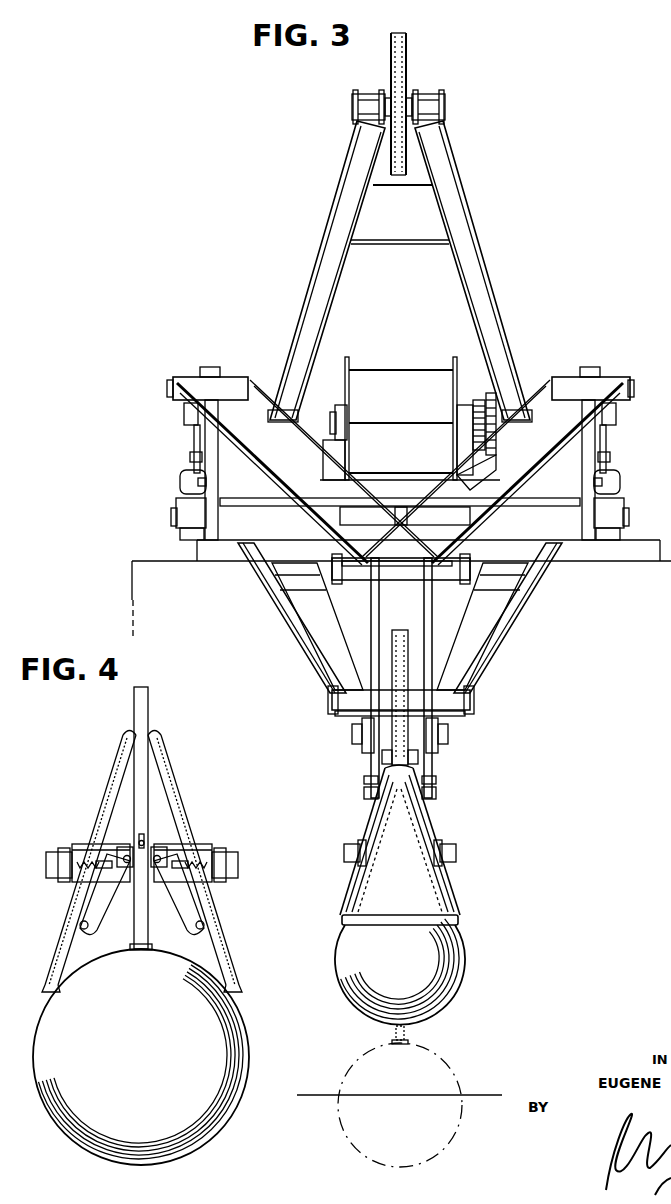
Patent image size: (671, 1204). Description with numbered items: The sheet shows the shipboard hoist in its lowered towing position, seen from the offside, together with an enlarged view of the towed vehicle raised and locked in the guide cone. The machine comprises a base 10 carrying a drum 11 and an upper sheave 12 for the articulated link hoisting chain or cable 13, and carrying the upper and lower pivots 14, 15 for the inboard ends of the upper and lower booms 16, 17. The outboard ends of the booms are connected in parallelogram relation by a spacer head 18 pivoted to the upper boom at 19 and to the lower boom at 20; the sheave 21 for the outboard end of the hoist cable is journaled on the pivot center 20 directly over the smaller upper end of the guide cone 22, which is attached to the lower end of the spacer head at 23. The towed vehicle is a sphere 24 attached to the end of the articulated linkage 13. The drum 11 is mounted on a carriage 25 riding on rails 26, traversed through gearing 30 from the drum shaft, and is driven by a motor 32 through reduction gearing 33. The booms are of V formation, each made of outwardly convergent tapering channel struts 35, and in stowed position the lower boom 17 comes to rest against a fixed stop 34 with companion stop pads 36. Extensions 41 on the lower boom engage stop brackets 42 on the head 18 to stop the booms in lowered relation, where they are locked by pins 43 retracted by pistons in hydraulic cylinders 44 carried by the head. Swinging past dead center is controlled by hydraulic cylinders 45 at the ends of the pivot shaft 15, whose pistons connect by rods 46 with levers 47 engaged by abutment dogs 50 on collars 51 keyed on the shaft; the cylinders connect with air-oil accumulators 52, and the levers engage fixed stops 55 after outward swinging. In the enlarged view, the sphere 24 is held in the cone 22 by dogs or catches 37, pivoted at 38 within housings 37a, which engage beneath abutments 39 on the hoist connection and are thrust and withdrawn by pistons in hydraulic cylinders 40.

In FIG. 3, the base 10 is at (612, 548).
In FIG. 3, the drum 11 is at (390, 372).
In FIG. 3, the upper sheave 12 is at (407, 52).
In FIG. 4, the articulated link hoisting chain or cable 13 is at (148, 712).
In FIG. 3, the upper pivot 14 is at (170, 384).
In FIG. 3, the lower pivot 15 is at (176, 506).
In FIG. 3, the upper boom 16 is at (280, 512).
In FIG. 3, the lower boom 17 is at (282, 618).
In FIG. 3, the spacer head 18 is at (424, 620).
In FIG. 3, the upper boom pivot 19 is at (400, 578).
In FIG. 3, the lower boom pivot 20 is at (328, 698).
In FIG. 3, the sheave 21 is at (404, 655).
In FIG. 3, the guide cone 22 is at (442, 888).
In FIG. 4, the guide cone 22 is at (163, 772).
In FIG. 3, the cone attachment 23 is at (364, 793).
In FIG. 3, the sphere 24 is at (462, 980).
In FIG. 4, the sphere 24 is at (154, 1067).
In FIG. 3, the carriage 25 is at (334, 478).
In FIG. 3, the rails 26 is at (386, 512).
In FIG. 3, the gearing 30 is at (480, 402).
In FIG. 3, the motor 32 is at (565, 470).
In FIG. 3, the reduction gearing 33 is at (490, 380).
In FIG. 3, the fixed stop 34 is at (292, 372).
In FIG. 3, the tapering channel struts 35 is at (320, 664).
In FIG. 3, the stop pads 36 is at (280, 580).
In FIG. 4, the dogs or catches 37 is at (112, 900).
In FIG. 4, the housing 37a is at (84, 846).
In FIG. 4, the catch pivot 38 is at (80, 924).
In FIG. 4, the abutments 39 is at (126, 856).
In FIG. 3, the hydraulic cylinders 40 is at (344, 852).
In FIG. 4, the hydraulic cylinders 40 is at (60, 852).
In FIG. 3, the extensions 41 is at (352, 715).
In FIG. 3, the stop brackets 42 is at (362, 742).
In FIG. 3, the pins 43 is at (352, 734).
In FIG. 3, the hydraulic cylinders 44 is at (382, 758).
In FIG. 3, the hydraulic cylinders 45 is at (180, 482).
In FIG. 3, the rods 46 is at (194, 442).
In FIG. 3, the levers 47 is at (190, 460).
In FIG. 3, the abutment dogs 50 is at (196, 540).
In FIG. 3, the collars 51 is at (180, 518).
In FIG. 3, the air-oil accumulators 52 is at (184, 412).
In FIG. 3, the fixed stops 55 is at (206, 482).